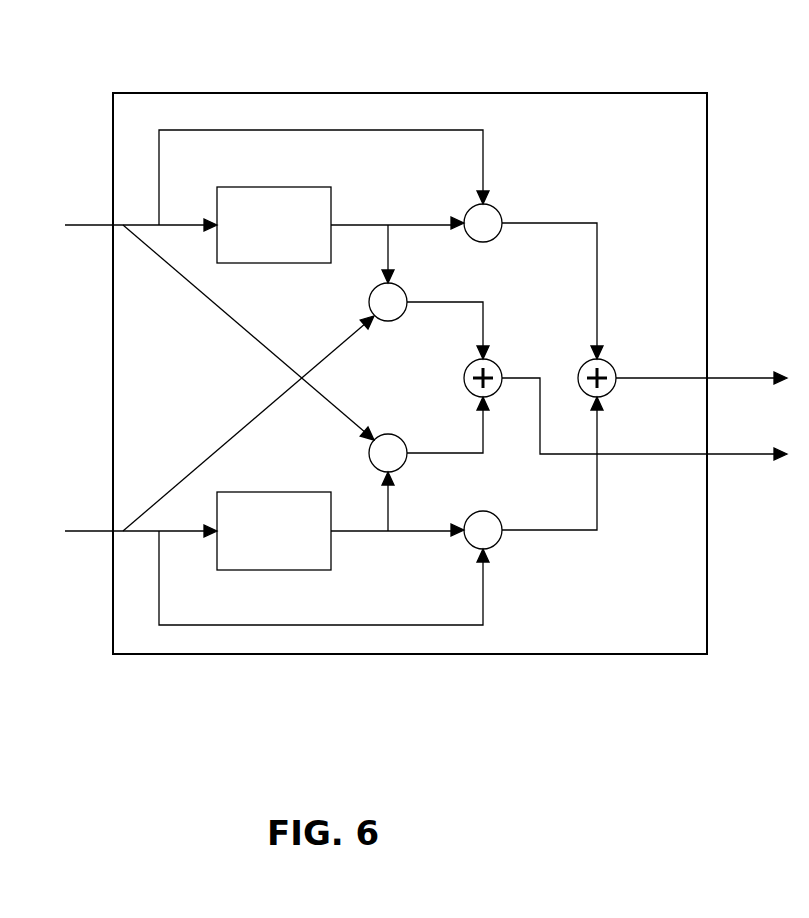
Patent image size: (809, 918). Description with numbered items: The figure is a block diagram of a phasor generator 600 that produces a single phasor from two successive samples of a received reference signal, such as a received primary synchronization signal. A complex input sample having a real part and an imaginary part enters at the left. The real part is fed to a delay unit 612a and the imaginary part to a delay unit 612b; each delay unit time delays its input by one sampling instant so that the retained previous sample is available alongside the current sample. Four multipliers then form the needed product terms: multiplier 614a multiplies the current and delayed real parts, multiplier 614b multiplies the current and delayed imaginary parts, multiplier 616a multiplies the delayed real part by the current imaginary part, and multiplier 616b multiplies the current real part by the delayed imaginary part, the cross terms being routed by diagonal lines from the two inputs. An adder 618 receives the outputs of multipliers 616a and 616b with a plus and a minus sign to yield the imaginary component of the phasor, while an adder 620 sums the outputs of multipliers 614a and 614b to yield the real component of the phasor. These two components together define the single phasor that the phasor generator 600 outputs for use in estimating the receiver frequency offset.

The phasor generator 600 is at (606, 68).
The delay unit 612a is at (320, 181).
The delay unit 612b is at (325, 476).
The multiplier 614a is at (497, 212).
The multiplier 614b is at (498, 517).
The multiplier 616a is at (401, 289).
The multiplier 616b is at (399, 437).
The adder 618 is at (496, 364).
The adder 620 is at (611, 364).